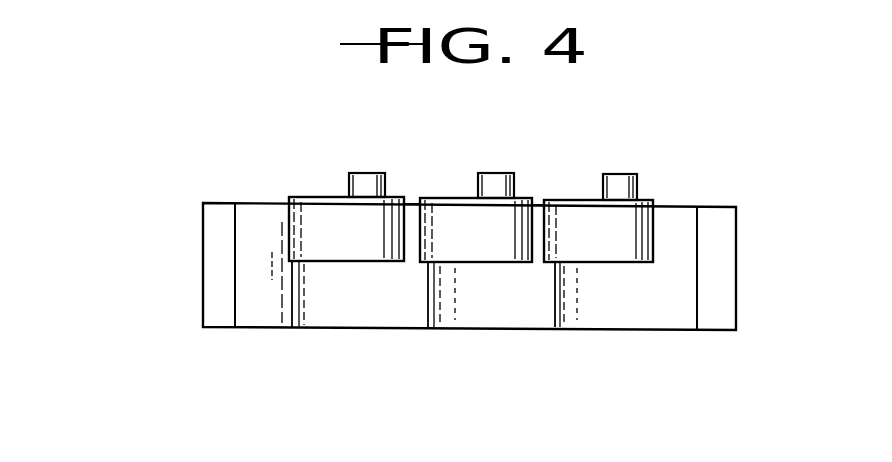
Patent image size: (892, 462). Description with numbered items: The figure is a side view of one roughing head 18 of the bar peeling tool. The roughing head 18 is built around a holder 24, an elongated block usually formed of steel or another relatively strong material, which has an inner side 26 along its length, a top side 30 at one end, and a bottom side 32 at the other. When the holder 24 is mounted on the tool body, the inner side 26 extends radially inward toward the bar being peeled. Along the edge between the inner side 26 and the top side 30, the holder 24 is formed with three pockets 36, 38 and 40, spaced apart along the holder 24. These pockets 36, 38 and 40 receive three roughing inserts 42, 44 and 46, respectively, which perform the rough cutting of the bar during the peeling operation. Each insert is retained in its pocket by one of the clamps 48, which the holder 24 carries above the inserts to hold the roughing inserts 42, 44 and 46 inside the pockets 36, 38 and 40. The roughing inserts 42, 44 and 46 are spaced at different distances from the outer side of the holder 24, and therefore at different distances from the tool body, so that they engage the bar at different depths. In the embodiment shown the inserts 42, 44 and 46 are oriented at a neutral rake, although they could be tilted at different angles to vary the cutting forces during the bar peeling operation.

The roughing head 18 is at (168, 222).
The holder 24 is at (262, 318).
The inner side 26 is at (612, 318).
The top side 30 is at (680, 208).
The bottom side 32 is at (531, 330).
The pocket 36 is at (292, 241).
The pocket 38 is at (528, 236).
The pocket 40 is at (653, 240).
The roughing insert 42 is at (320, 210).
The roughing insert 44 is at (448, 200).
The roughing insert 46 is at (580, 208).
The clamps 48 is at (364, 184).